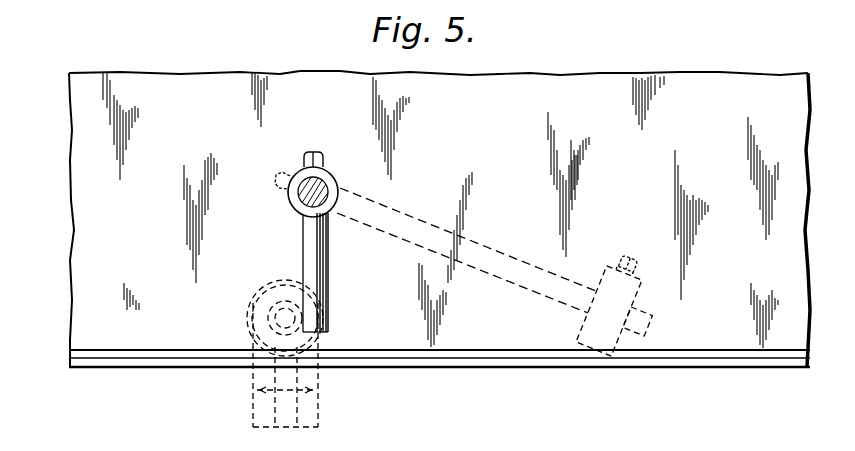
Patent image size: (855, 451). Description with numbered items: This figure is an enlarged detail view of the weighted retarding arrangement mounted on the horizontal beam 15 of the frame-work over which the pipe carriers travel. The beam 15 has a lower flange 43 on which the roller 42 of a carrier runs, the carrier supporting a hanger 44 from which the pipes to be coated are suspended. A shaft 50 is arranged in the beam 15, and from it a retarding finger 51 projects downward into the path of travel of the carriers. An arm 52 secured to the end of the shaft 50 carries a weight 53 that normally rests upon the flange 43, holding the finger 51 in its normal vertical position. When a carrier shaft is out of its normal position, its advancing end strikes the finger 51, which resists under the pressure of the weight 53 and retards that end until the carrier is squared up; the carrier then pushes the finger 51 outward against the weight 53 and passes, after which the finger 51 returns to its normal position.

The beam 15 is at (290, 77).
The roller 42 is at (250, 320).
The flange 43 is at (464, 368).
The hanger 44 is at (316, 412).
The shaft 50 is at (318, 190).
The retarding finger 51 is at (308, 248).
The arm 52 is at (492, 255).
The weight 53 is at (630, 300).